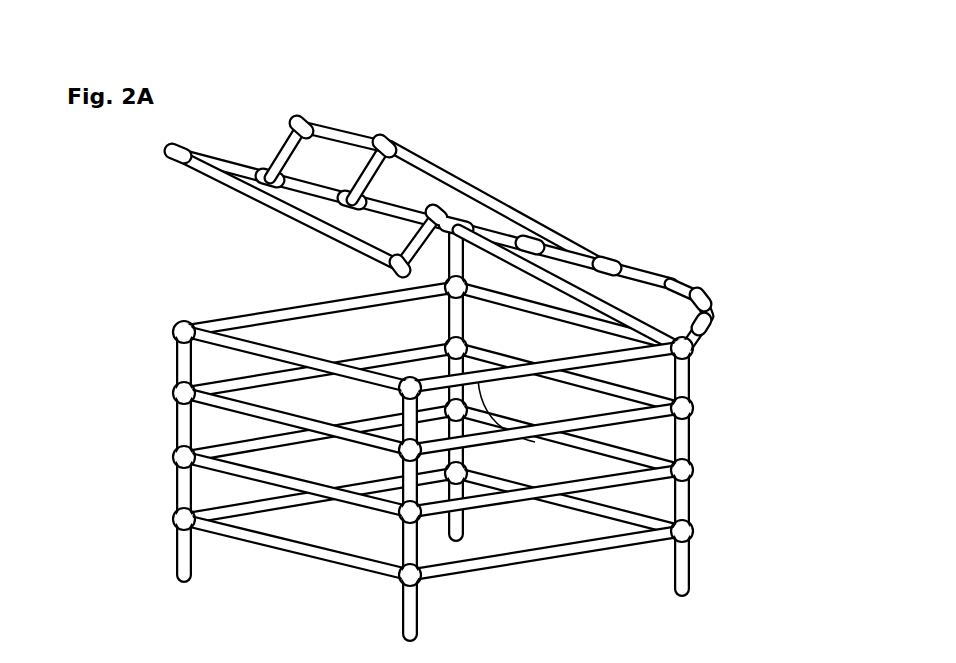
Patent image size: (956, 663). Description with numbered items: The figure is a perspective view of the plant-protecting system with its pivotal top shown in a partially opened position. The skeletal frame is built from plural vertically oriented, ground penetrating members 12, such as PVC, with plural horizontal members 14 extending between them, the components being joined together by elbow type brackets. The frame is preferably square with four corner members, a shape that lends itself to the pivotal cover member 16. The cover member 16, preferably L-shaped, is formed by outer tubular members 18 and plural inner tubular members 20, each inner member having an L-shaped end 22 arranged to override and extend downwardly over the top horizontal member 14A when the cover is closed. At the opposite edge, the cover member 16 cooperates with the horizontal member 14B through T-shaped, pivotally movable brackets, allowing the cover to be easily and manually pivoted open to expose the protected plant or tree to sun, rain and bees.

The ground penetrating member 12 is at (186, 500).
The horizontal member 14 is at (590, 535).
The top horizontal member 14A is at (230, 345).
The horizontal member 14B is at (668, 462).
The pivotal cover member 16 is at (490, 233).
The outer tubular member 18 is at (597, 290).
The inner tubular member 20 is at (262, 167).
The L-shaped end 22 is at (395, 200).